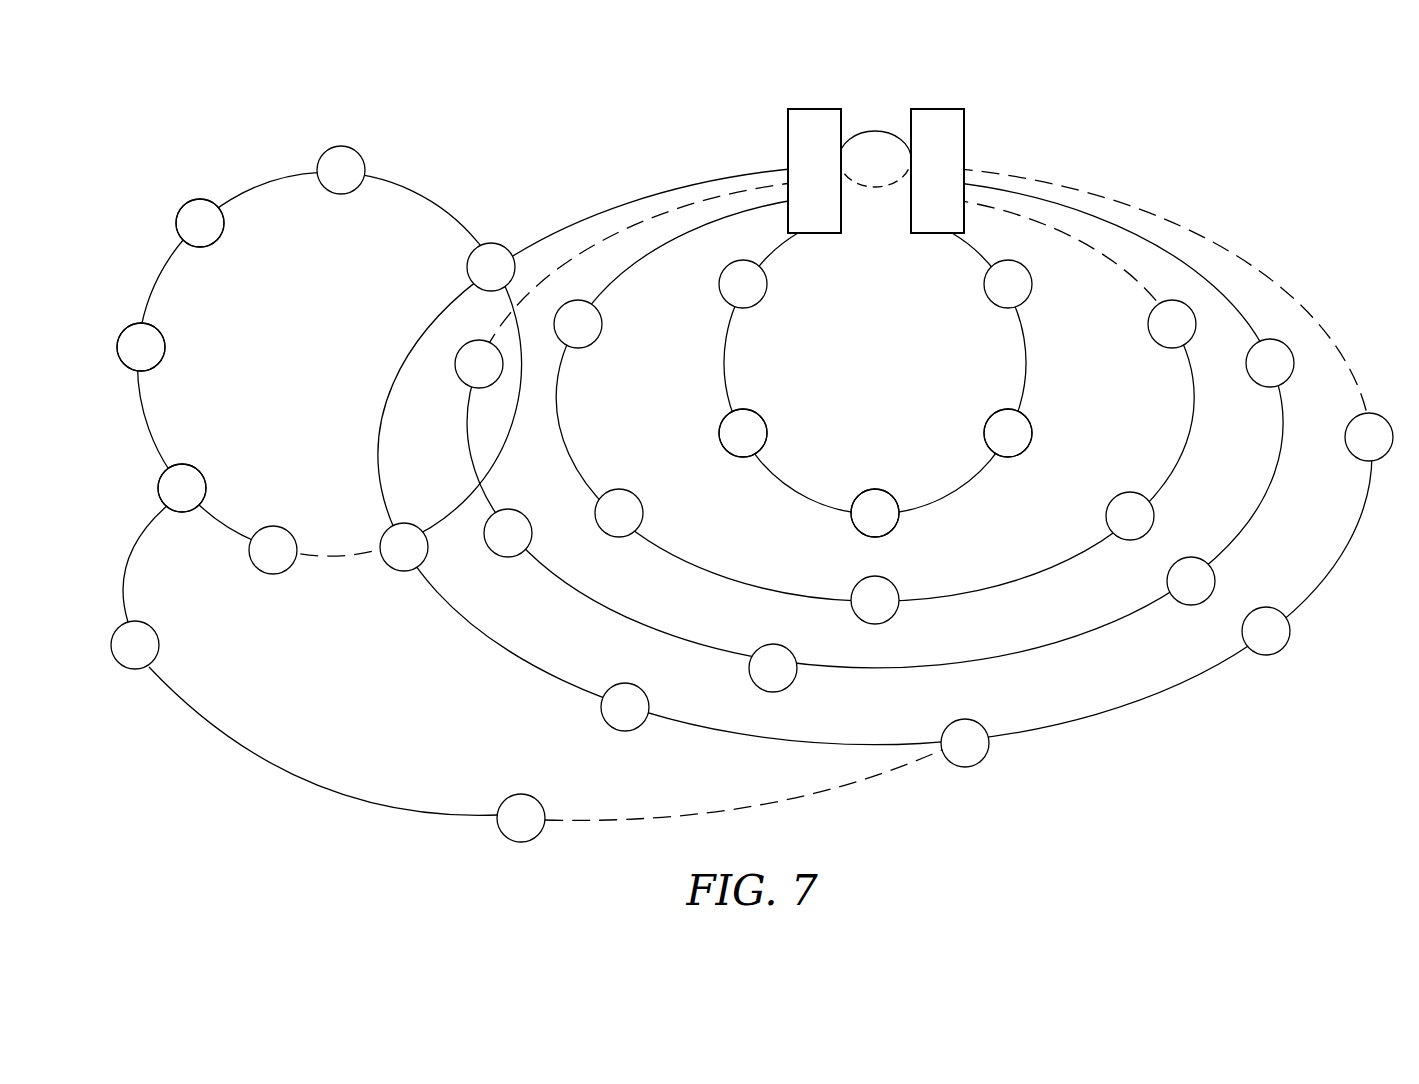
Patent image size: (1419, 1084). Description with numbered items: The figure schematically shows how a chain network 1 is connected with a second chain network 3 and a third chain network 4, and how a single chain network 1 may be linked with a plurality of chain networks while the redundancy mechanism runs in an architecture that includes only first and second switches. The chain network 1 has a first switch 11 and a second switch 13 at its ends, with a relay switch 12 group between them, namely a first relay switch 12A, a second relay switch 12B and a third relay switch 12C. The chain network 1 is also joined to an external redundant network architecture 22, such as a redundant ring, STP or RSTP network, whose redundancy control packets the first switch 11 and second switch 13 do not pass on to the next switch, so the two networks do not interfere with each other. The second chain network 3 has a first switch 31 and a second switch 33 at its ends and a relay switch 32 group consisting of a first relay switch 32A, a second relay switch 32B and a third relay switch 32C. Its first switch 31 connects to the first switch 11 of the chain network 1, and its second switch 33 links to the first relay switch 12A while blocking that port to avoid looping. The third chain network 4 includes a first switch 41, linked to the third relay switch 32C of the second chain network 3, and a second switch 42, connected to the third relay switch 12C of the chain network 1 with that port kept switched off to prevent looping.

The chain network 1 is at (724, 349).
The second chain network 3 is at (437, 200).
The third chain network 4 is at (235, 763).
The first switch 11 is at (492, 260).
The relay switch 12 is at (972, 421).
The first relay switch 12A is at (402, 570).
The second relay switch 12B is at (877, 497).
The third relay switch 12C is at (1023, 440).
The second switch 13 is at (1017, 279).
The external redundant network architecture 22 is at (918, 117).
The first switch 31 is at (342, 157).
The relay switch 32 is at (247, 398).
The first relay switch 32A is at (193, 207).
The second relay switch 32B is at (153, 348).
The third relay switch 32C is at (192, 480).
The second switch 33 is at (273, 565).
The first switch 41 is at (150, 645).
The second switch 42 is at (518, 832).